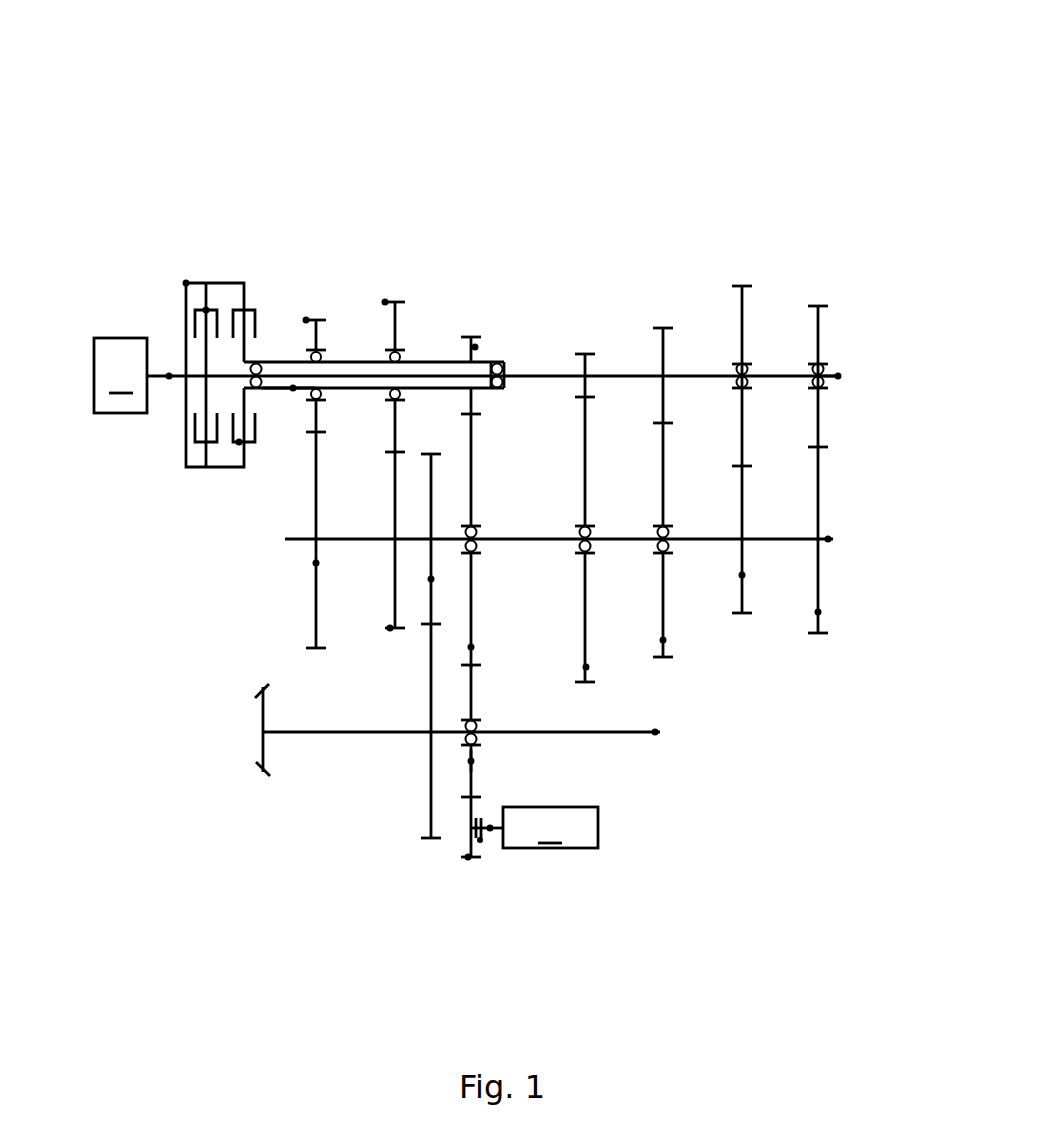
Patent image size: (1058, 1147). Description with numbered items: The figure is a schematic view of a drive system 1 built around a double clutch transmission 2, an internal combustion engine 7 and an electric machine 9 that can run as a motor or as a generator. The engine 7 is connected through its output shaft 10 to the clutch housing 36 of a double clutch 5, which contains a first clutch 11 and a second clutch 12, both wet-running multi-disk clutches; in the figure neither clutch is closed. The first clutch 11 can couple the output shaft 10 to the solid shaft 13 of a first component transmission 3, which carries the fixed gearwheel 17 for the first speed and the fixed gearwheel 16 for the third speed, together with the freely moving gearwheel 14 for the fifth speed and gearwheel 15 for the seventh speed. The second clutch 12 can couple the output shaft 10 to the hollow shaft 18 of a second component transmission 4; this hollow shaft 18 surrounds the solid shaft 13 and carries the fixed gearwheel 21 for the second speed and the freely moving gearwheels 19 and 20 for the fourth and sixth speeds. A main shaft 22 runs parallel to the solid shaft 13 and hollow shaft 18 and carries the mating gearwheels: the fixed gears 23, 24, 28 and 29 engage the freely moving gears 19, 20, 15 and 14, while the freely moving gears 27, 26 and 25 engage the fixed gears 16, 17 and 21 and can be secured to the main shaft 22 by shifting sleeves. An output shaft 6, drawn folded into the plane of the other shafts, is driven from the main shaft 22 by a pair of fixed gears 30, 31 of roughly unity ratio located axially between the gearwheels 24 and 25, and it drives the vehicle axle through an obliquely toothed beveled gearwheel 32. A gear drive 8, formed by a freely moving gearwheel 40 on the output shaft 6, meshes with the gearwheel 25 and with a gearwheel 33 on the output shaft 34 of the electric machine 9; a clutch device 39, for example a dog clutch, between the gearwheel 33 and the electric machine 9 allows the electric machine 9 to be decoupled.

The drive system 1 is at (143, 56).
The double clutch transmission 2 is at (773, 124).
The first component transmission 3 is at (512, 263).
The second component transmission 4 is at (374, 269).
The double clutch 5 is at (213, 308).
The output shaft 6 is at (491, 773).
The internal combustion engine 7 is at (120, 375).
The gear drive 8 is at (409, 762).
The electric machine 9 is at (550, 827).
The output shaft 10 is at (128, 265).
The first clutch 11 is at (227, 296).
The second clutch 12 is at (222, 417).
The solid shaft 13 is at (877, 265).
The gearwheel 14 is at (842, 335).
The gearwheel 15 is at (712, 325).
The gearwheel 16 is at (640, 351).
The gearwheel 17 is at (571, 351).
The hollow shaft 18 is at (288, 456).
The gearwheel 19 is at (321, 275).
The gearwheel 20 is at (379, 275).
The gearwheel 21 is at (494, 256).
The main shaft 22 is at (608, 512).
The gearwheel 23 is at (245, 523).
The gearwheel 24 is at (284, 554).
The gearwheel 25 is at (322, 571).
The gearwheel 26 is at (623, 684).
The gearwheel 27 is at (720, 684).
The gearwheel 28 is at (832, 556).
The gearwheel 29 is at (870, 579).
The gearwheel 30 is at (302, 646).
The gearwheel 31 is at (404, 892).
The beveled gearwheel 32 is at (216, 747).
The gearwheel 33 is at (448, 901).
The output shaft 34 is at (513, 886).
The clutch housing 36 is at (156, 218).
The clutch device 39 is at (487, 882).
The gearwheel 40 is at (398, 786).